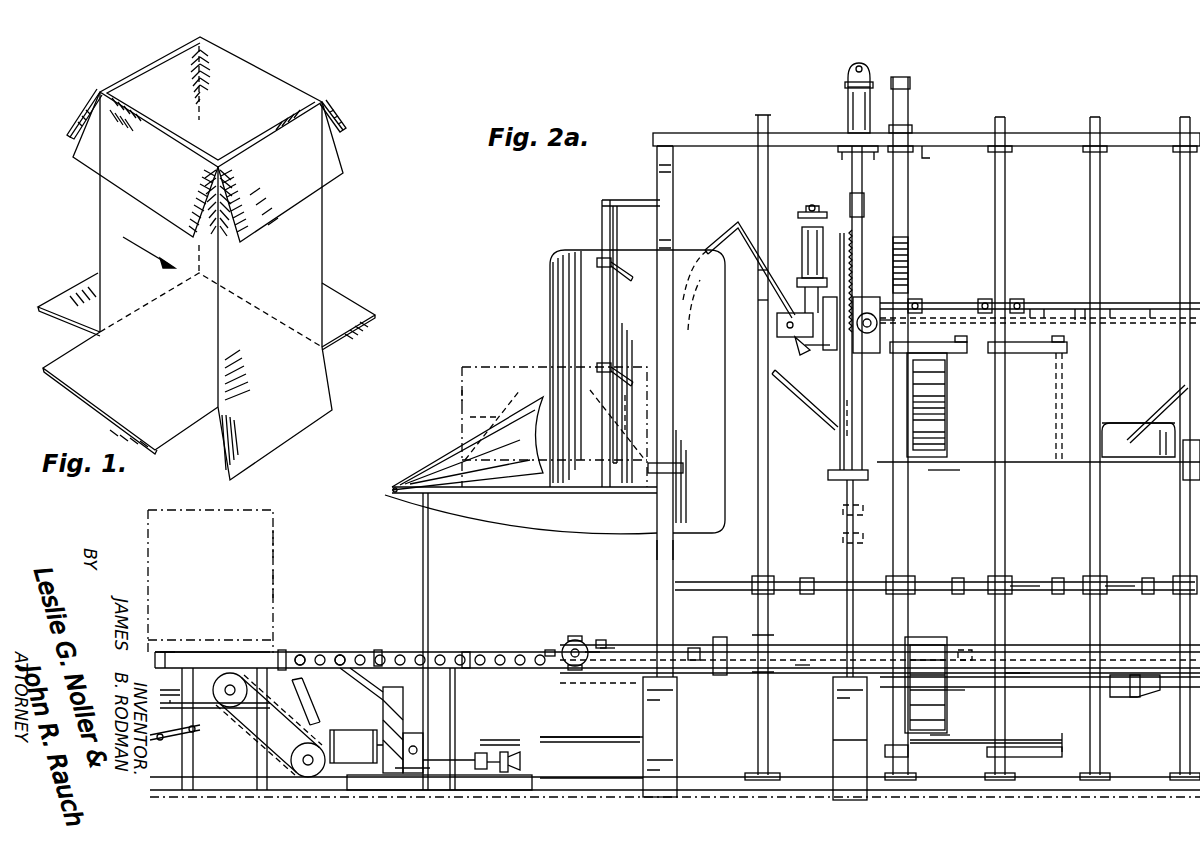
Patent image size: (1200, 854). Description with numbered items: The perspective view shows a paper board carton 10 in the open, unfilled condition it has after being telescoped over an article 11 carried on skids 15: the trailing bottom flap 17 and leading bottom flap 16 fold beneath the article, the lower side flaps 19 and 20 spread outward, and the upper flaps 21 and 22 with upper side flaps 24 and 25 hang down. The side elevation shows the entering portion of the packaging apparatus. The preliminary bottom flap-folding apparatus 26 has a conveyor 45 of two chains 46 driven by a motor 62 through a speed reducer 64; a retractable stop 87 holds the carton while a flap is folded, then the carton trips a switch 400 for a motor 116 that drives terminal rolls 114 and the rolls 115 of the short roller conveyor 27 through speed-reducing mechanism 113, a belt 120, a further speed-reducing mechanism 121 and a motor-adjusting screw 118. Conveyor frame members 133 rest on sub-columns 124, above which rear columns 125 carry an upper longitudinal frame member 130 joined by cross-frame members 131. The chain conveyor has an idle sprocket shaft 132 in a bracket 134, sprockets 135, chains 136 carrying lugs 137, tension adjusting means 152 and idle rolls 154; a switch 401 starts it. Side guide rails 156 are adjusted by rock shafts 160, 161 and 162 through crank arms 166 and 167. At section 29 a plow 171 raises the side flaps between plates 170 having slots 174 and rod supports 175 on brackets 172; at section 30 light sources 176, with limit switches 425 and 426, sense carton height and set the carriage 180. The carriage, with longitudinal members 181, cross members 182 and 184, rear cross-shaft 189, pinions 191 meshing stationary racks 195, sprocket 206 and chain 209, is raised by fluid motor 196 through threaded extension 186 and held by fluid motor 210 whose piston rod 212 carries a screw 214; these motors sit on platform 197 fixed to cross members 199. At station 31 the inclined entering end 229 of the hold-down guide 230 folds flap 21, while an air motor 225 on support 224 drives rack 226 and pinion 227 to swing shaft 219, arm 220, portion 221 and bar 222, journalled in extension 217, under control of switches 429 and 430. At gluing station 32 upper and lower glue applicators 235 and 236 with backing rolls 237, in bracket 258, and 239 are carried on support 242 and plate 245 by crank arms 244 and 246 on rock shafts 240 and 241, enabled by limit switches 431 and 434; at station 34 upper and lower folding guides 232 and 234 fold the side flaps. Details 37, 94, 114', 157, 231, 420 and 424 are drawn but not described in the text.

In FIG. 1, the paper board carton 10 is at (92, 217).
In FIG. 2A, the paper board carton 10 is at (273, 520).
In FIG. 2A, the article to be packaged 11 is at (273, 553).
In FIG. 2A, the skids 15 is at (255, 638).
In FIG. 1, the leading bottom flap 16 is at (328, 390).
In FIG. 1, the trailing bottom flap 17 is at (62, 316).
In FIG. 1, the outer lower side flap 19 is at (92, 400).
In FIG. 1, the inner lower side flap 20 is at (345, 300).
In FIG. 1, the leading upper flap 21 is at (340, 162).
In FIG. 2A, the leading upper flap 21 is at (630, 418).
In FIG. 1, the trailing upper flap 22 is at (82, 108).
In FIG. 2A, the trailing upper flap 22 is at (495, 417).
In FIG. 1, the outer upper side flap 24 is at (95, 168).
In FIG. 2A, the outer upper side flap 24 is at (462, 397).
In FIG. 1, the inner upper side flap 25 is at (338, 124).
In FIG. 2A, the preliminary bottom flap-folding apparatus 26 is at (280, 588).
In FIG. 2A, the short roller conveyor 27 is at (488, 650).
In FIG. 2A, the flap erecting and scanning section 29 is at (505, 360).
In FIG. 2A, the height sensing section 30 is at (553, 263).
In FIG. 2A, the upper end flap folding station 31 is at (778, 226).
In FIG. 2A, the gluing station 32 is at (930, 612).
In FIG. 2A, the side flap-folding station 34 is at (1108, 410).
In FIG. 2A, the conveyor frame 37 is at (200, 658).
In FIG. 2A, the conveyor 45 is at (177, 652).
In FIG. 2A, the parallel chains 46 is at (165, 740).
In FIG. 2A, the motor 62 is at (347, 785).
In FIG. 2A, the speed reducer 64 is at (318, 732).
In FIG. 2A, the retractable stop 87 is at (283, 652).
In FIG. 2A, the chain drive 94 is at (303, 712).
In FIG. 2A, the speed-reducing mechanism 113 is at (480, 769).
In FIG. 2A, the terminal rolls 114 is at (342, 637).
In FIG. 2A, the chain link 114' is at (314, 643).
In FIG. 2A, the rolls 115 is at (466, 655).
In FIG. 2A, the motor 116 is at (510, 743).
In FIG. 2A, the motor-adjusting screw 118 is at (508, 772).
In FIG. 2A, the belt 120 is at (420, 773).
In FIG. 2A, the further speed-reducing mechanism 121 is at (410, 773).
In FIG. 2A, the sub-columns 124 is at (677, 725).
In FIG. 2A, the rear columns 125 is at (673, 547).
In FIG. 2A, the upper longitudinal frame member 130 is at (960, 133).
In FIG. 2A, the cross-frame members 131 is at (657, 153).
In FIG. 2A, the rear vertical idle sprocket shaft 132 is at (578, 640).
In FIG. 2A, the frame members 133 is at (612, 683).
In FIG. 2A, the supporting bracket 134 is at (605, 645).
In FIG. 2A, the rear sprockets 135 is at (548, 650).
In FIG. 2A, the parallel chains 136 is at (590, 650).
In FIG. 2A, the opposed lugs 137 is at (720, 637).
In FIG. 2A, the screw type adjusting means 152 is at (690, 648).
In FIG. 2A, the idle rolls 154 is at (768, 628).
In FIG. 2A, the side guiding rails 156 is at (1018, 582).
In FIG. 2A, the shaft 157 is at (700, 582).
In FIG. 2A, the rear vertical rock shaft 160 is at (768, 449).
In FIG. 2A, the intermediate vertical rock shaft 161 is at (1100, 520).
In FIG. 2A, the forward vertical rock shaft 162 is at (1183, 473).
In FIG. 2A, the crank arm 166 is at (1118, 580).
In FIG. 2A, the crank arm 167 is at (1180, 560).
In FIG. 2A, the vertical plates 170 is at (625, 496).
In FIG. 2A, the plow 171 is at (432, 462).
In FIG. 2A, the bracket 172 is at (606, 198).
In FIG. 2A, the vertical slot 174 is at (619, 292).
In FIG. 2A, the vertical rod support 175 is at (617, 312).
In FIG. 2A, the light sources 176 is at (615, 258).
In FIG. 2A, the vertically adjustable carriage 180 is at (1127, 290).
In FIG. 2A, the longitudinal members 181 is at (1082, 316).
In FIG. 2A, the rear cross members 182 is at (816, 352).
In FIG. 2A, the intermediate cross-member 184 is at (1037, 303).
In FIG. 2A, the threaded extension 186 is at (855, 420).
In FIG. 2A, the rear cross-shaft 189 is at (872, 297).
In FIG. 2A, the pinions 191 is at (895, 320).
In FIG. 2A, the stationary vertical rack gears 195 is at (864, 240).
In FIG. 2A, the vertical fluid motor 196 is at (848, 110).
In FIG. 2A, the horizontal platform 197 is at (888, 133).
In FIG. 2A, the cross members 199 is at (842, 153).
In FIG. 2A, the sprocket 206 is at (850, 405).
In FIG. 2A, the longitudinally extending chain 209 is at (984, 303).
In FIG. 2A, the fluid motor 210 is at (910, 86).
In FIG. 2A, the piston rod 212 is at (908, 188).
In FIG. 2A, the elongated screw 214 is at (908, 258).
In FIG. 2A, the rearwardly projecting extension 217 is at (823, 335).
In FIG. 2A, the horizontal shaft 219 is at (765, 300).
In FIG. 2A, the arm 220 is at (760, 275).
In FIG. 2A, the arcuately downwardly extending portion 221 is at (692, 290).
In FIG. 2A, the cross flap-engaging bar 222 is at (692, 325).
In FIG. 2A, the vertical support 224 is at (798, 284).
In FIG. 2A, the reciprocable air motor 225 is at (805, 232).
In FIG. 2A, the rack gear 226 is at (800, 345).
In FIG. 2A, the pinion 227 is at (777, 323).
In FIG. 2A, the inclined entering end 229 is at (800, 400).
In FIG. 2A, the central hold-down guide 230 is at (1028, 462).
In FIG. 2A, the rail 231 is at (1062, 395).
In FIG. 2A, the upper side flap-folding guides 232 is at (1127, 430).
In FIG. 2A, the lower side flap-folding guides 234 is at (1115, 697).
In FIG. 2A, the upper glue applicator 235 is at (947, 438).
In FIG. 2A, the lower glue applicator 236 is at (948, 637).
In FIG. 2A, the guide roll 237 is at (920, 416).
In FIG. 2A, the guide roll 239 is at (940, 740).
In FIG. 2A, the vertical rock shaft 240 is at (893, 582).
In FIG. 2A, the vertical rock shaft 241 is at (1005, 530).
In FIG. 2A, the support plate 242 is at (947, 380).
In FIG. 2A, the crank arms 244 is at (947, 360).
In FIG. 2A, the supporting plate 245 is at (980, 740).
In FIG. 2A, the crank arms 246 is at (925, 760).
In FIG. 2A, the bracket 258 is at (947, 400).
In FIG. 2A, the switch 400 is at (378, 652).
In FIG. 2A, the switch 401 is at (800, 672).
In FIG. 2A, the block 420 is at (600, 640).
In FIG. 2A, the block 424 is at (850, 196).
In FIG. 2A, the limit switch 425 is at (865, 510).
In FIG. 2A, the limit switch 426 is at (865, 538).
In FIG. 2A, the switch 429 is at (825, 672).
In FIG. 2A, the switch 430 is at (833, 745).
In FIG. 2A, the limit switch 431 is at (965, 650).
In FIG. 2A, the limit switch 434 is at (965, 690).